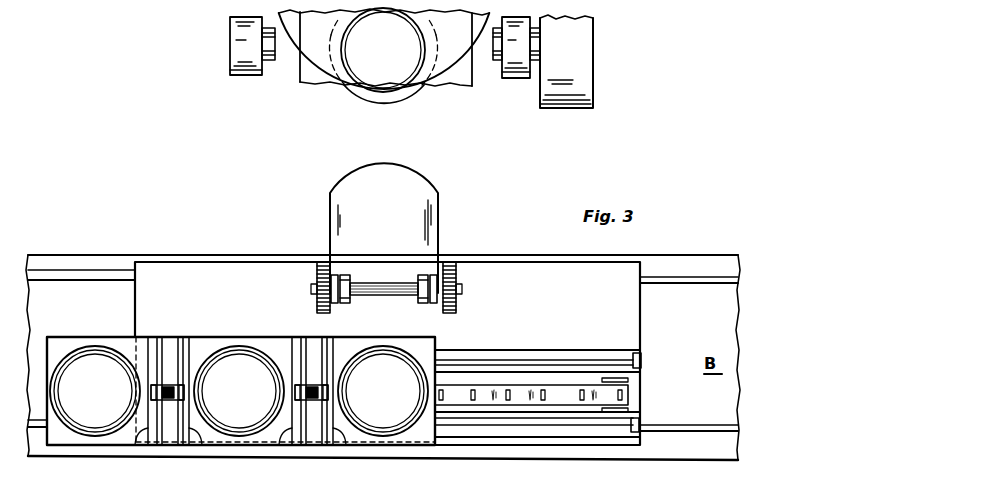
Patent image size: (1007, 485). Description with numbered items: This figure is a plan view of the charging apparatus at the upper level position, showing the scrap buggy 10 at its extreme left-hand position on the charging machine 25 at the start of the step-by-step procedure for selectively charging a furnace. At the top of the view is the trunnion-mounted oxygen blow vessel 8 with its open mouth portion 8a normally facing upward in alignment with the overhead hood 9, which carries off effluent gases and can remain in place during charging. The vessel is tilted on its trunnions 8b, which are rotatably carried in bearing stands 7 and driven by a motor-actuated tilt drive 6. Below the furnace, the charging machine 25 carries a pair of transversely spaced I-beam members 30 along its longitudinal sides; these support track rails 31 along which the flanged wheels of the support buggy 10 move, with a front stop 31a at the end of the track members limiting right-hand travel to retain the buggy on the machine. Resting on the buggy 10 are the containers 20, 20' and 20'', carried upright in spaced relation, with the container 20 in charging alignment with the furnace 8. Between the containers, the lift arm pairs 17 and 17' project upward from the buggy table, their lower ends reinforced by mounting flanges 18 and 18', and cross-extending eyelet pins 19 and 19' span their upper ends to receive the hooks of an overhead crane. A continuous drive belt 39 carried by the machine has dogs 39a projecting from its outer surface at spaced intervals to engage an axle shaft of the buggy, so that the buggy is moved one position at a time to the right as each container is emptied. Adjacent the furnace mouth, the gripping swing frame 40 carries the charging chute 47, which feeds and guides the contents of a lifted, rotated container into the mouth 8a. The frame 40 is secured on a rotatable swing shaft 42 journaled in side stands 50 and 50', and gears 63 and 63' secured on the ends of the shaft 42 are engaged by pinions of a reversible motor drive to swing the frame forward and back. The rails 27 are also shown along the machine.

The motor-actuated tilt drive 6 is at (563, 108).
The bearing stands 7 is at (238, 77).
The furnace vessel 8 is at (457, 133).
The open mouth portion 8a is at (362, 91).
The trunnions 8b is at (270, 62).
The overhead hood 9 is at (450, 77).
The scrap buggy 10 is at (232, 330).
The lift arm pair 17 is at (337, 409).
The lift arm pair 17' is at (198, 408).
The mounting flange 18 is at (288, 409).
The mounting flange 18' is at (145, 408).
The eyelet pin 19 is at (311, 433).
The eyelet pin 19' is at (167, 432).
The container 20 is at (383, 391).
The container 20' is at (239, 391).
The container 20'' is at (95, 391).
The charging machine 25 is at (680, 344).
The rail 27 is at (110, 281).
The I-beam members 30 is at (569, 351).
The track rails 31 is at (605, 345).
The front stop 31a is at (640, 418).
The continuous drive belt 39 is at (518, 384).
The dogs 39a is at (470, 395).
The swing frame 40 is at (375, 267).
The swing shaft 42 is at (406, 283).
The charging chute 47 is at (477, 214).
The side stand 50 is at (412, 303).
The side stand 50' is at (357, 303).
The gear 63 is at (470, 287).
The gear 63' is at (297, 287).